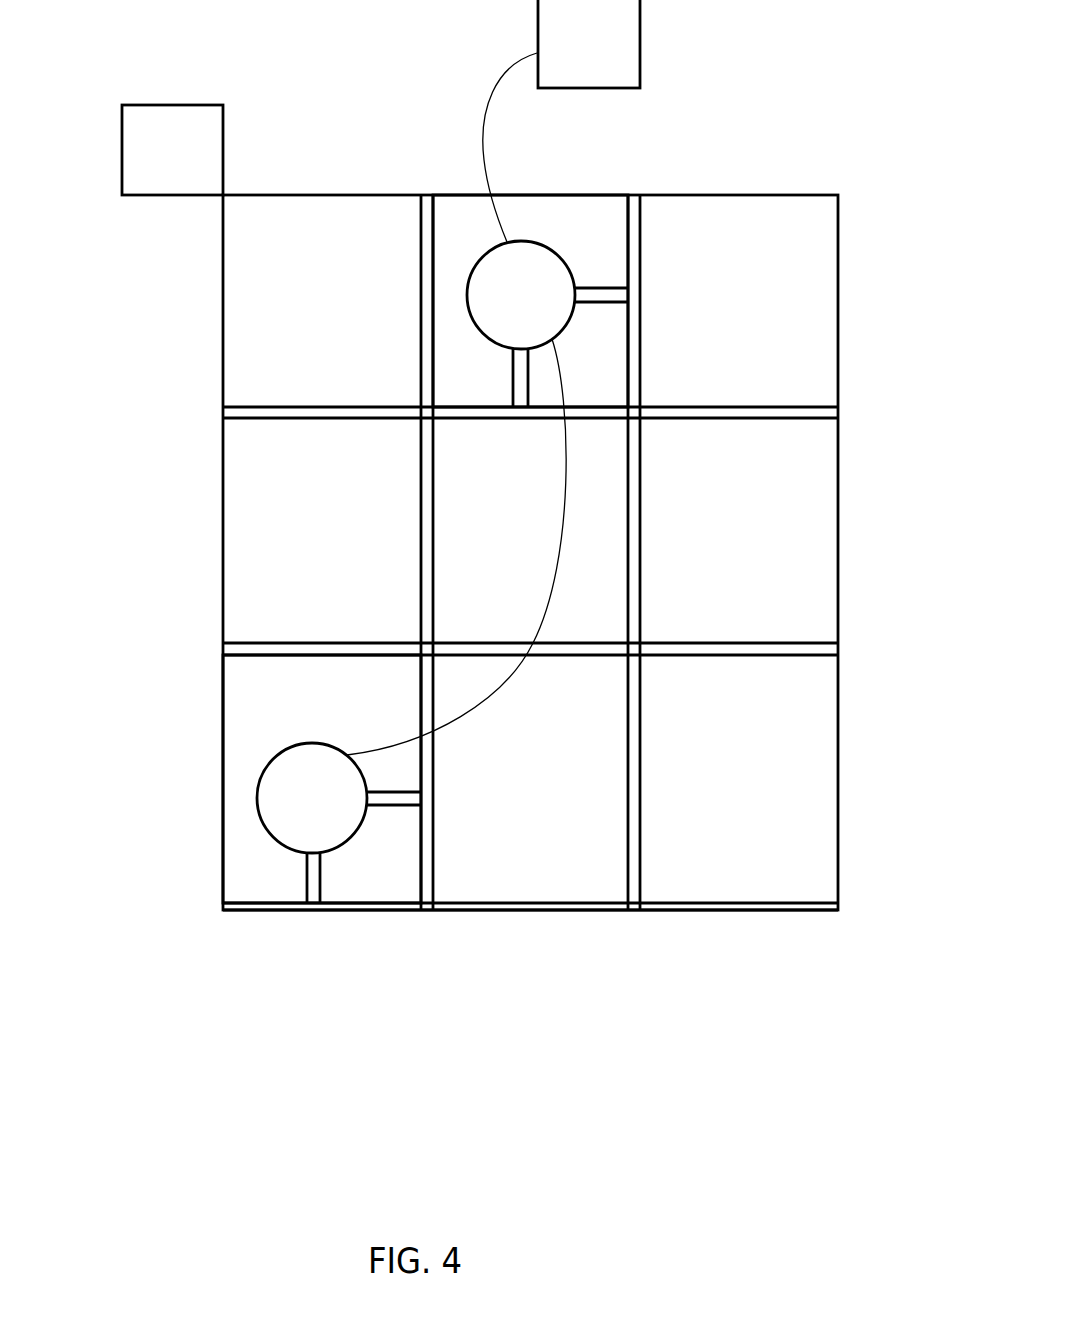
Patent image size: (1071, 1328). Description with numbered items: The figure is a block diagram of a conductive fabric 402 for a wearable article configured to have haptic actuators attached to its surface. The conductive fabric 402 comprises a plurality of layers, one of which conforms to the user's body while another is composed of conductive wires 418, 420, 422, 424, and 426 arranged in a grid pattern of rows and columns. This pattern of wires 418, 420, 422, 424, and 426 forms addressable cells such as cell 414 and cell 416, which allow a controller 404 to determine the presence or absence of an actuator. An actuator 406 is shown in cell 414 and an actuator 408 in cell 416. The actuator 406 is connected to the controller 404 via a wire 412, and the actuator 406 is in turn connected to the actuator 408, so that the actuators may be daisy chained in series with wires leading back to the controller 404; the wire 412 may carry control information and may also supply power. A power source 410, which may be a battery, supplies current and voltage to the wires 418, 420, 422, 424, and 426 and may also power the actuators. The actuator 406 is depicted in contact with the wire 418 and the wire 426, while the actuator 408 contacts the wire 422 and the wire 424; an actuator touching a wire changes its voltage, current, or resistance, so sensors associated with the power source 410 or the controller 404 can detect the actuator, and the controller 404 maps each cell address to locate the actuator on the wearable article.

The conductive fabric 402 is at (214, 525).
The controller 404 is at (605, 68).
The actuator 406 is at (537, 333).
The actuator 408 is at (328, 835).
The power source 410 is at (184, 185).
The wire 412 is at (471, 108).
The cell 414 is at (615, 205).
The cell 416 is at (242, 879).
The wire 418 is at (850, 413).
The wire 420 is at (850, 647).
The wire 422 is at (850, 905).
The wire 424 is at (426, 925).
The wire 426 is at (634, 925).